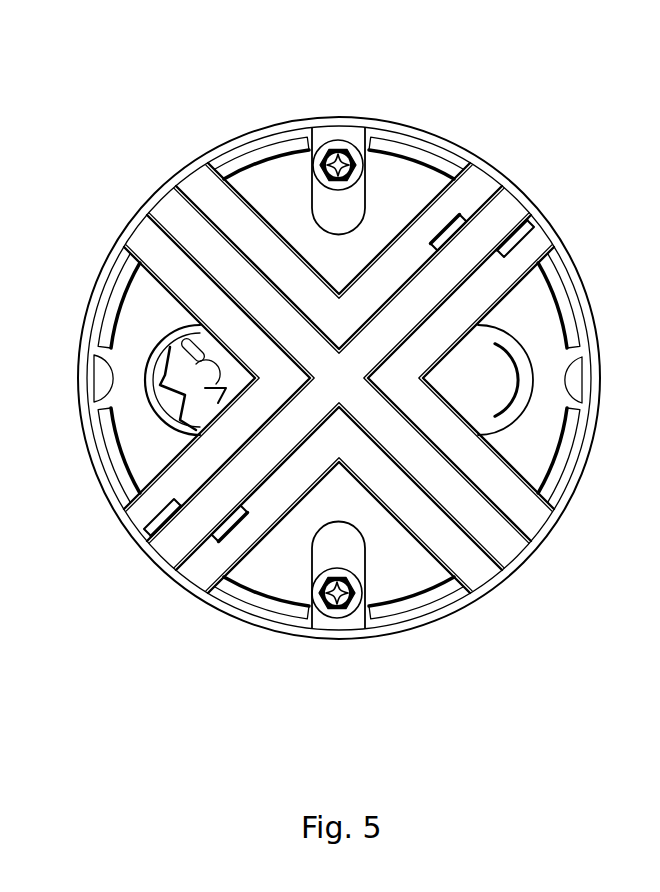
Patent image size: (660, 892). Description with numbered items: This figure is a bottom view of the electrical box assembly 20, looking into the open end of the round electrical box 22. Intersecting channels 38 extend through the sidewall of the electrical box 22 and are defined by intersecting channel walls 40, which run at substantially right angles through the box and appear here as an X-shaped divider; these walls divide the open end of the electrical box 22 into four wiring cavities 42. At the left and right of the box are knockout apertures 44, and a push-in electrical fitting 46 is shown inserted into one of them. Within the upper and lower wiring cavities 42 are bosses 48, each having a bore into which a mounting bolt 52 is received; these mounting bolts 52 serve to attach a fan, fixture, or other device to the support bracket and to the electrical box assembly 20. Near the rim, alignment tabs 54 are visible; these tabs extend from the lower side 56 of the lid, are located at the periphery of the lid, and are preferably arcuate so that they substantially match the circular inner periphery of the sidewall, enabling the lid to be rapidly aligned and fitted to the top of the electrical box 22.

The electrical box assembly 20 is at (97, 132).
The electrical box 22 is at (437, 142).
The intersecting channels 38 is at (517, 560).
The intersecting channel walls 40 is at (195, 580).
The wiring cavities 42 is at (282, 580).
The knockout apertures 44 is at (532, 380).
The push-in electrical fitting 46 is at (157, 378).
The bosses 48 is at (328, 210).
The mounting bolts 52 is at (334, 141).
The alignment tabs 54 is at (417, 600).
The lower side 56 is at (414, 192).